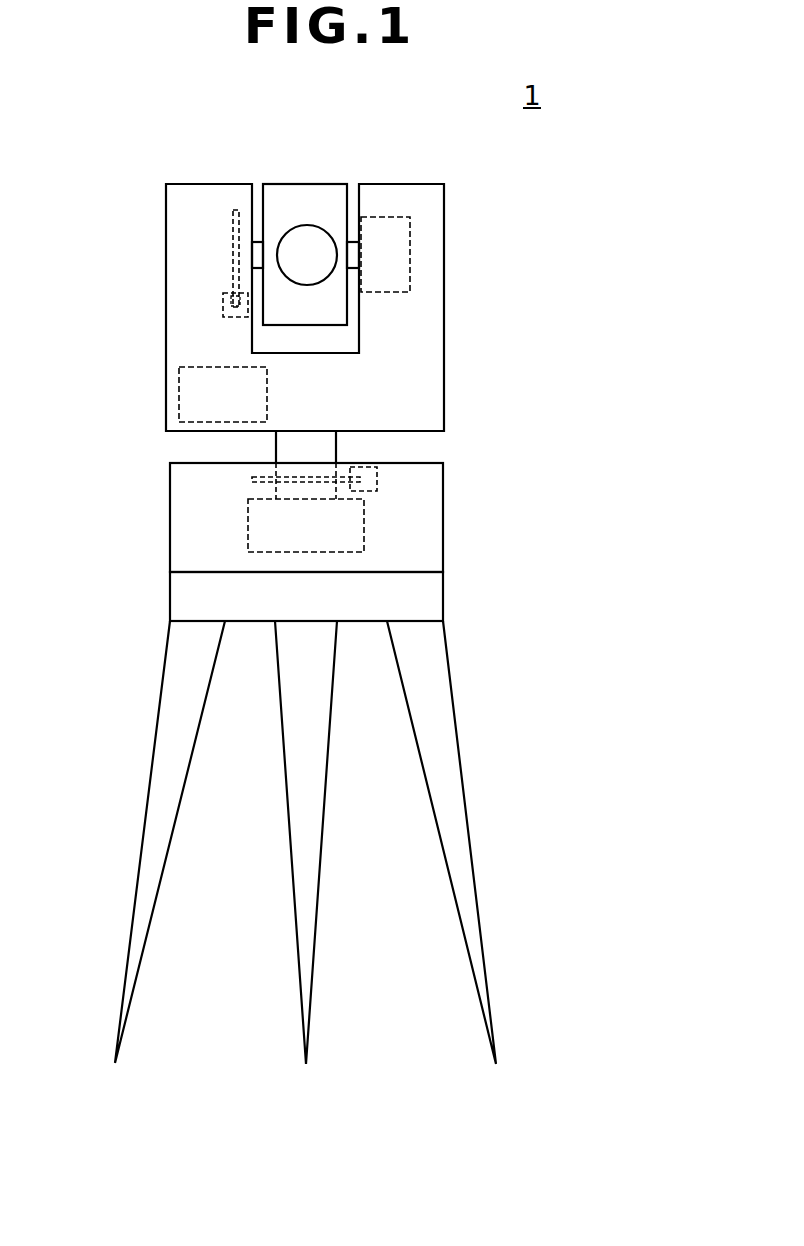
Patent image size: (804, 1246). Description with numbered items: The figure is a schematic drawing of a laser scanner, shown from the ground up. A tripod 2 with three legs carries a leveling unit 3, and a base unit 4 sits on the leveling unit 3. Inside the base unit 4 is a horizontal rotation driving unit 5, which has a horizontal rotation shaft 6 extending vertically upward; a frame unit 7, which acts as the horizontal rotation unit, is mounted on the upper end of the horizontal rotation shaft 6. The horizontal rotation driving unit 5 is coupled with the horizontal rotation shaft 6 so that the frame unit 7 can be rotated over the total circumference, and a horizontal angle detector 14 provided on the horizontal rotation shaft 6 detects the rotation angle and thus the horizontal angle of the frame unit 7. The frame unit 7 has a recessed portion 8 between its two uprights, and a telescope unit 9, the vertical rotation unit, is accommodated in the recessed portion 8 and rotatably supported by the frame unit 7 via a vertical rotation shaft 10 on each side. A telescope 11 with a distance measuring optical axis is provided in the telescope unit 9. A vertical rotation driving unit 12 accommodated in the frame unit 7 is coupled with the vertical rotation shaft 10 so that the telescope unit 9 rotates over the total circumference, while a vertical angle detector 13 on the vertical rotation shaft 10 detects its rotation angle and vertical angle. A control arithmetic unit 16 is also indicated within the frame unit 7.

The tripod 2 is at (452, 695).
The leveling unit 3 is at (443, 593).
The base unit 4 is at (443, 530).
The horizontal rotation driving unit 5 is at (364, 518).
The horizontal rotation shaft 6 is at (336, 447).
The frame unit 7 is at (444, 320).
The recessed portion 8 is at (353, 207).
The telescope unit 9 is at (300, 183).
The vertical rotation shaft 10 is at (263, 242).
The telescope 11 is at (297, 227).
The vertical rotation driving unit 12 is at (397, 217).
The vertical angle detector 13 is at (223, 283).
The horizontal angle detector 14 is at (238, 485).
The control arithmetic unit 16 is at (179, 385).